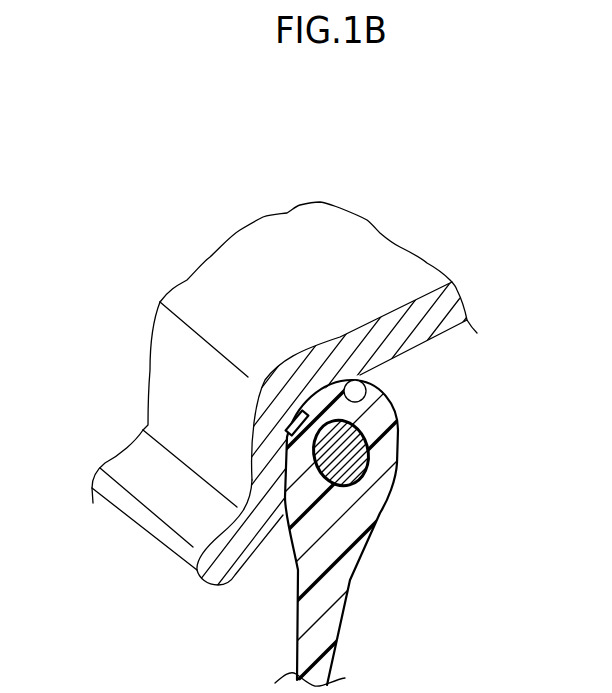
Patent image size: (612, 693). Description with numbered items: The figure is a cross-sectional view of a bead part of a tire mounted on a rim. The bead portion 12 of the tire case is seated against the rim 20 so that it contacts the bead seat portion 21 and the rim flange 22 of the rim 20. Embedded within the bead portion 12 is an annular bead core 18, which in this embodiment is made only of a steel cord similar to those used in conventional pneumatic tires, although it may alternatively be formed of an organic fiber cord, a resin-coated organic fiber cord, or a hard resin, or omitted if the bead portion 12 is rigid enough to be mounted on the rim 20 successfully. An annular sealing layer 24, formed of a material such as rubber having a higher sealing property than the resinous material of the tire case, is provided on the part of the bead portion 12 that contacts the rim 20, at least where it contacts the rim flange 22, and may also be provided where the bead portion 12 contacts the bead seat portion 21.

The rim 20 is at (309, 188).
The bead seat portion 21 is at (358, 379).
The rim flange 22 is at (163, 444).
The sealing layer 24 is at (288, 422).
The bead core 18 is at (368, 457).
The bead portion 12 is at (393, 486).